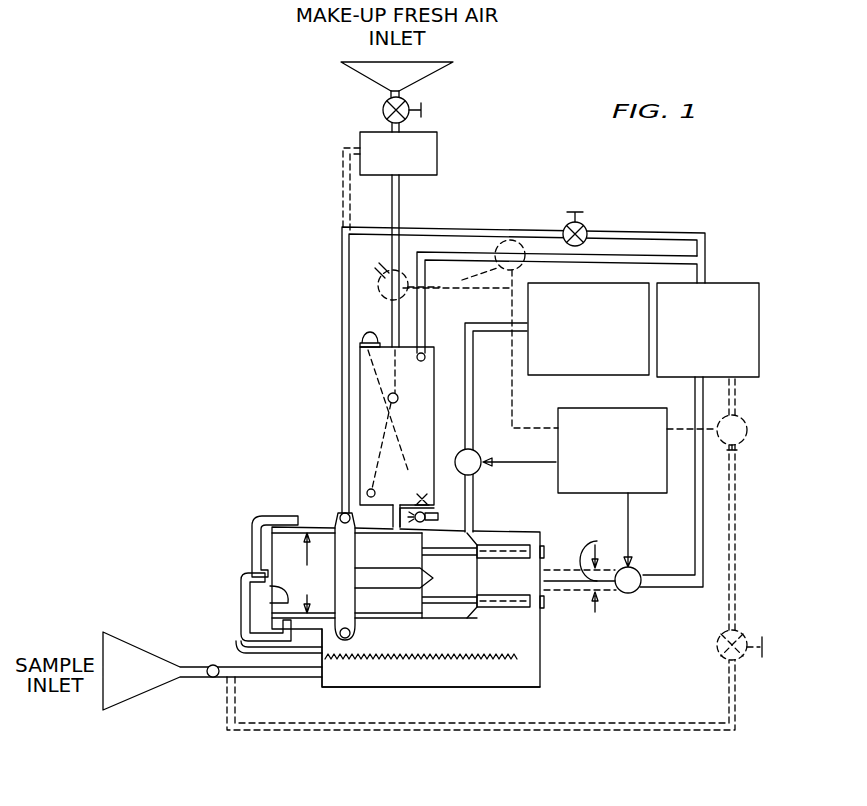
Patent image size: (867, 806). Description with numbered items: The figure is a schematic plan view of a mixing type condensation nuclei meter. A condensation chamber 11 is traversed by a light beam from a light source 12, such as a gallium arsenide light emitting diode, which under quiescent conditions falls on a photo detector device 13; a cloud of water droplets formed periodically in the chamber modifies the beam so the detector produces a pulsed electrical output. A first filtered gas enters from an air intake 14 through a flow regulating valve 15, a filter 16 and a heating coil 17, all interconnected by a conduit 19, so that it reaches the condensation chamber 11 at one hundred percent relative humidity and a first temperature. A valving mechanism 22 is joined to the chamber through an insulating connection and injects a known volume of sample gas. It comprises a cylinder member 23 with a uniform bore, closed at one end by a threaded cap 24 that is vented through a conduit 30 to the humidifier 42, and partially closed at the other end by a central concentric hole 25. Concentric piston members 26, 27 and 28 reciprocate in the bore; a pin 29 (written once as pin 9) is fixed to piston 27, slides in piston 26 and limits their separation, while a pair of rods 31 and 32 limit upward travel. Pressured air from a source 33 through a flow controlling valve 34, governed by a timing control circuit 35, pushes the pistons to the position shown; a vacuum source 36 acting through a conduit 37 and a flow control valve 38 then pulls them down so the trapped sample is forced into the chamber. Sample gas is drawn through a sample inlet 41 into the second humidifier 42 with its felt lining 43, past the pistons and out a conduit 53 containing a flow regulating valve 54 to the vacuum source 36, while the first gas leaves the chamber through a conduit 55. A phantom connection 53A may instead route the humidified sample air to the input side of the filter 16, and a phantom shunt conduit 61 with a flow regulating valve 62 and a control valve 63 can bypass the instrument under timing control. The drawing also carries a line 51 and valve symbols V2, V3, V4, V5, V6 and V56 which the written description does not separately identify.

The pin 9 is at (377, 598).
The condensation chamber 11 is at (352, 403).
The light source 12 is at (432, 508).
The photo detector device 13 is at (365, 332).
The air intake 14 is at (424, 68).
The flow regulating valve 15 is at (424, 109).
The filter 16 is at (430, 166).
The heating coil 17 is at (398, 395).
The conduit 19 is at (400, 207).
The valving mechanism 22 is at (240, 531).
The cylinder member 23 is at (395, 505).
The threaded cap 24 is at (255, 548).
The central concentric hole 25 is at (545, 567).
The piston member 26 is at (280, 557).
The piston member 27 is at (392, 560).
The piston member 28 is at (420, 575).
The pin 29 is at (270, 592).
The conduit 30 is at (242, 650).
The rod 31 is at (552, 525).
The rod 32 is at (543, 602).
The source of pressured air 33 is at (527, 374).
The flow controlling valve 34 is at (458, 455).
The timing control circuit 35 is at (640, 488).
The vacuum source 36 is at (760, 332).
The conduit 37 is at (698, 537).
The flow control valve 38 is at (628, 594).
The sample inlet 41 is at (130, 692).
The second humidifier 42 is at (541, 676).
The felt lining 43 is at (430, 660).
The control line 51 is at (435, 281).
The conduit 53 is at (462, 228).
The connection 53A is at (345, 183).
The flow regulating valve 54 is at (583, 216).
The conduit 55 is at (621, 256).
The conduit 61 is at (375, 731).
The flow regulating valve 62 is at (744, 630).
The control valve 63 is at (741, 415).
The valve V2 is at (640, 589).
The valve V3 is at (516, 243).
The valve V4 is at (478, 453).
The valve V5 is at (744, 442).
The valve V6 is at (745, 660).
The valve V56 is at (372, 269).